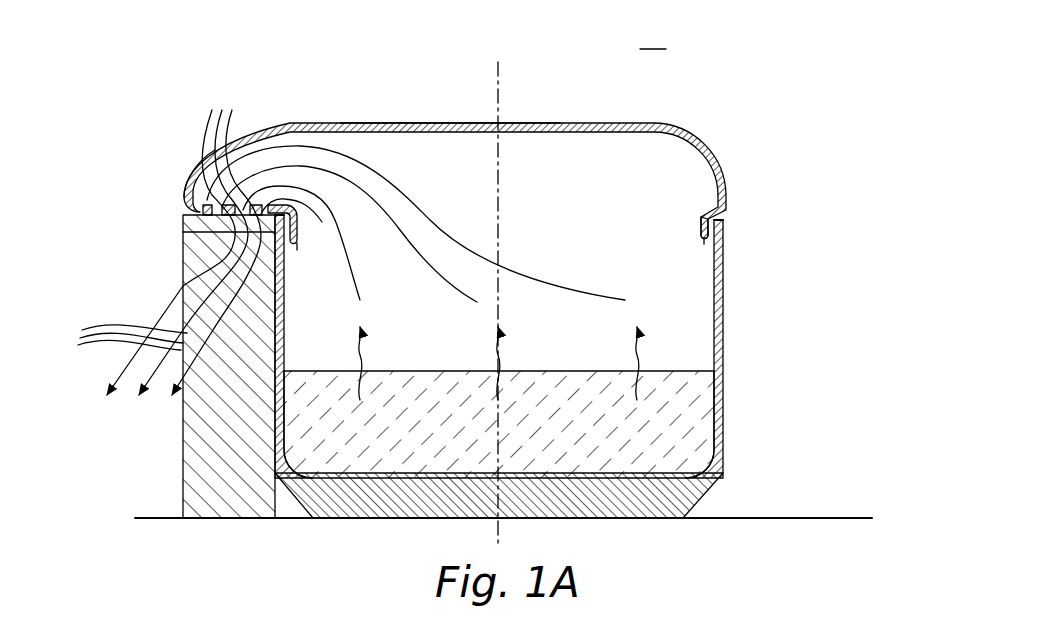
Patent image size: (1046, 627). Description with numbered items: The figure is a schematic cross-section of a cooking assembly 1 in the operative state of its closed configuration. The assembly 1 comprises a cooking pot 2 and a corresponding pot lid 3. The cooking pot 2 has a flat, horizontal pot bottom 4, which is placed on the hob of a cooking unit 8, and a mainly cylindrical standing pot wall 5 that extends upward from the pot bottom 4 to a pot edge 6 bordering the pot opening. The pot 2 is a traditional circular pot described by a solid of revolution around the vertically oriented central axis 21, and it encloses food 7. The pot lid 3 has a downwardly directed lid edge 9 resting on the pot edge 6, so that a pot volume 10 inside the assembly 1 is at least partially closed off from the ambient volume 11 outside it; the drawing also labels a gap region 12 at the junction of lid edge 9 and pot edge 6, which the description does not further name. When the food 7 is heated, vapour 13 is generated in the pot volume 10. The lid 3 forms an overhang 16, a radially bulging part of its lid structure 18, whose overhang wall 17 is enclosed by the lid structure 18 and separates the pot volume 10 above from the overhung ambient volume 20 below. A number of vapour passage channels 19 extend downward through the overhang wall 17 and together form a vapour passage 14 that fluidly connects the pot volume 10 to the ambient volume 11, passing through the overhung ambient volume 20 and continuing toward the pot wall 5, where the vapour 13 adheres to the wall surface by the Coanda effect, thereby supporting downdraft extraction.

The cooking assembly 1 is at (136, 84).
The cooking pot 2 is at (539, 405).
The pot lid 3 is at (714, 133).
The pot bottom 4 is at (637, 507).
The pot wall 5 is at (285, 338).
The pot edge 6 is at (298, 236).
The food 7 is at (576, 436).
The cooking unit 8 is at (815, 516).
The lid edge 9 is at (297, 199).
The pot volume 10 is at (594, 222).
The ambient volume 11 is at (653, 37).
The gap 12 is at (297, 248).
The vapour 13 is at (361, 352).
The vapour passage 14 is at (117, 334).
The overhang 16 is at (185, 170).
The overhang wall 17 is at (183, 232).
The lid structure 18 is at (400, 122).
The vapour passage channels 19 is at (184, 239).
The overhung ambient volume 20 is at (244, 484).
The central axis 21 is at (500, 78).